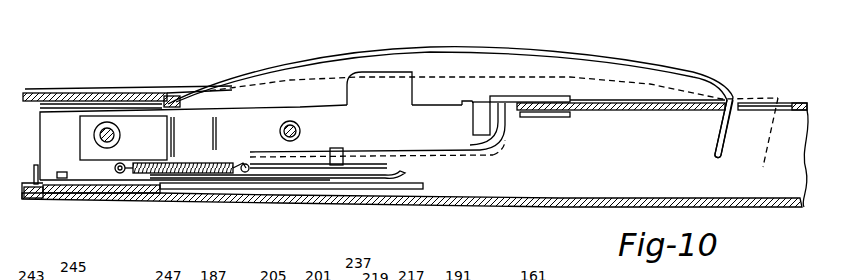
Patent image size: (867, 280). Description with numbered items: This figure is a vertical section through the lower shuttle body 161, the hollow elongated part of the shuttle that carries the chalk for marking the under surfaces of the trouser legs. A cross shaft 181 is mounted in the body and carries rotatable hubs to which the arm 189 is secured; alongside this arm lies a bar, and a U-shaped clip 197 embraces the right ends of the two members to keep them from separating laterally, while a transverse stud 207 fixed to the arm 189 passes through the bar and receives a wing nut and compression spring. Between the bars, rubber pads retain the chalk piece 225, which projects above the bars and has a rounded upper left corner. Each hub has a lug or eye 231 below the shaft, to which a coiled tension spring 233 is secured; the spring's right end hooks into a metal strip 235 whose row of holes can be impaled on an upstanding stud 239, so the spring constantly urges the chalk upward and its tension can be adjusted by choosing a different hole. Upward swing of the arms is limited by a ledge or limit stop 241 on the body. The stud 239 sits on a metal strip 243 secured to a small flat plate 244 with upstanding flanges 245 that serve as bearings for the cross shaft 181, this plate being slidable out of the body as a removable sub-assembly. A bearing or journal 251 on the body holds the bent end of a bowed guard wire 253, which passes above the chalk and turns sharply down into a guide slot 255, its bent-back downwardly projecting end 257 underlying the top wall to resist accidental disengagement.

The lower shuttle body 161 is at (191, 204).
The cross shaft 181 is at (119, 135).
The arm 189 is at (496, 146).
The U-shaped clip 197 is at (488, 123).
The transverse stud 207 is at (300, 131).
The chalk piece 225 is at (413, 96).
The lug or eye 231 is at (114, 168).
The coiled tension spring 233 is at (221, 163).
The metal strip 235 is at (307, 168).
The upstanding stud 239 is at (350, 152).
The ledge or limit stop 241 is at (507, 97).
The metal strip 243 is at (395, 190).
The small flat plate 244 is at (113, 194).
The upstanding flanges 245 is at (46, 196).
The bearing or journal 251 is at (171, 96).
The guard wire 253 is at (461, 48).
The guide slot 255 is at (758, 103).
The downwardly projecting end 257 is at (718, 137).